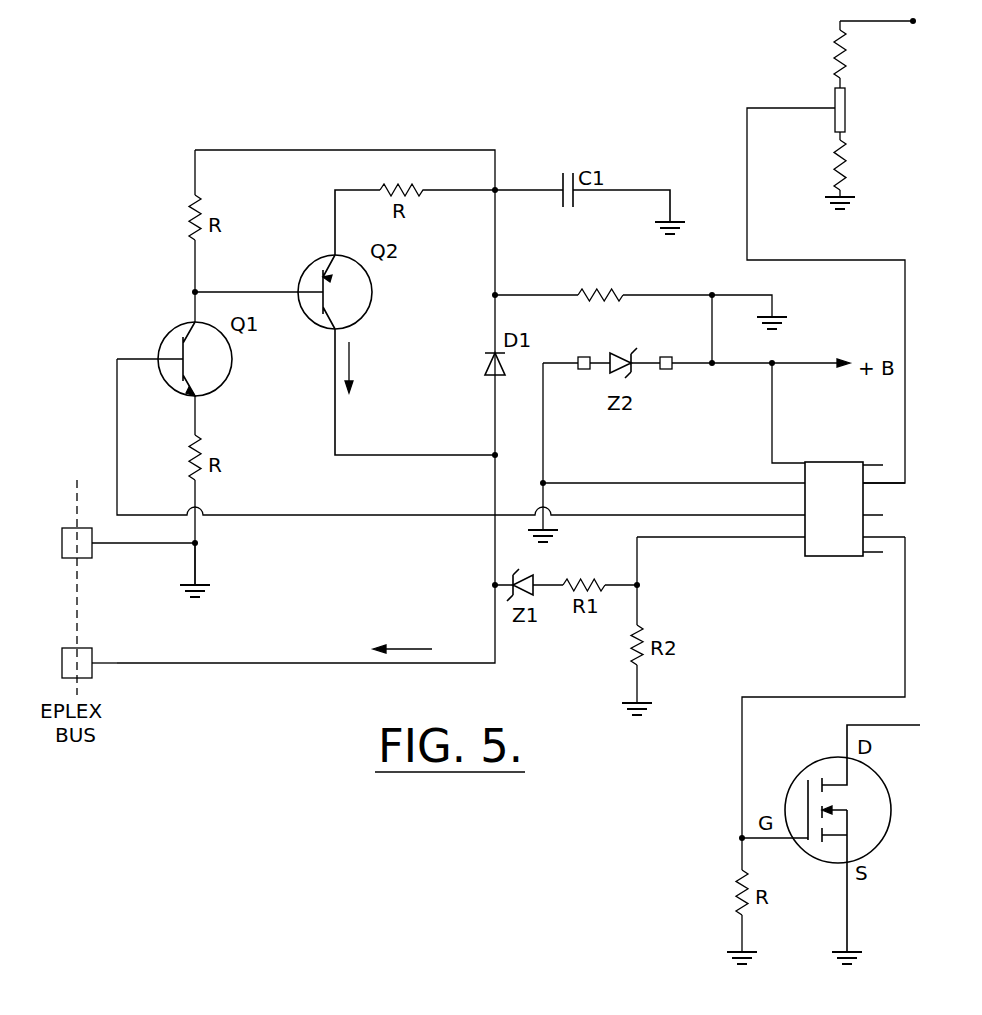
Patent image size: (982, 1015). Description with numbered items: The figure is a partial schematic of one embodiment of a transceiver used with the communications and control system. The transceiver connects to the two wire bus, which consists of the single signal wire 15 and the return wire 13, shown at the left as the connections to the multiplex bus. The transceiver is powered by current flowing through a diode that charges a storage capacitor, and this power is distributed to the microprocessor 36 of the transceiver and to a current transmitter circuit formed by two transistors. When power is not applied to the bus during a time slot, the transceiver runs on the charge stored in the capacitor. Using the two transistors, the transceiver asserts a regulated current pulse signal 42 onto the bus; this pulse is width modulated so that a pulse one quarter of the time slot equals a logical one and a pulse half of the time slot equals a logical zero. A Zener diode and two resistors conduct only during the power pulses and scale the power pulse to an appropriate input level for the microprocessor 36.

The return wire 13 is at (117, 547).
The single signal wire 15 is at (117, 667).
The microprocessor 36 is at (848, 520).
The regulated current pulse signal 42 is at (305, 662).